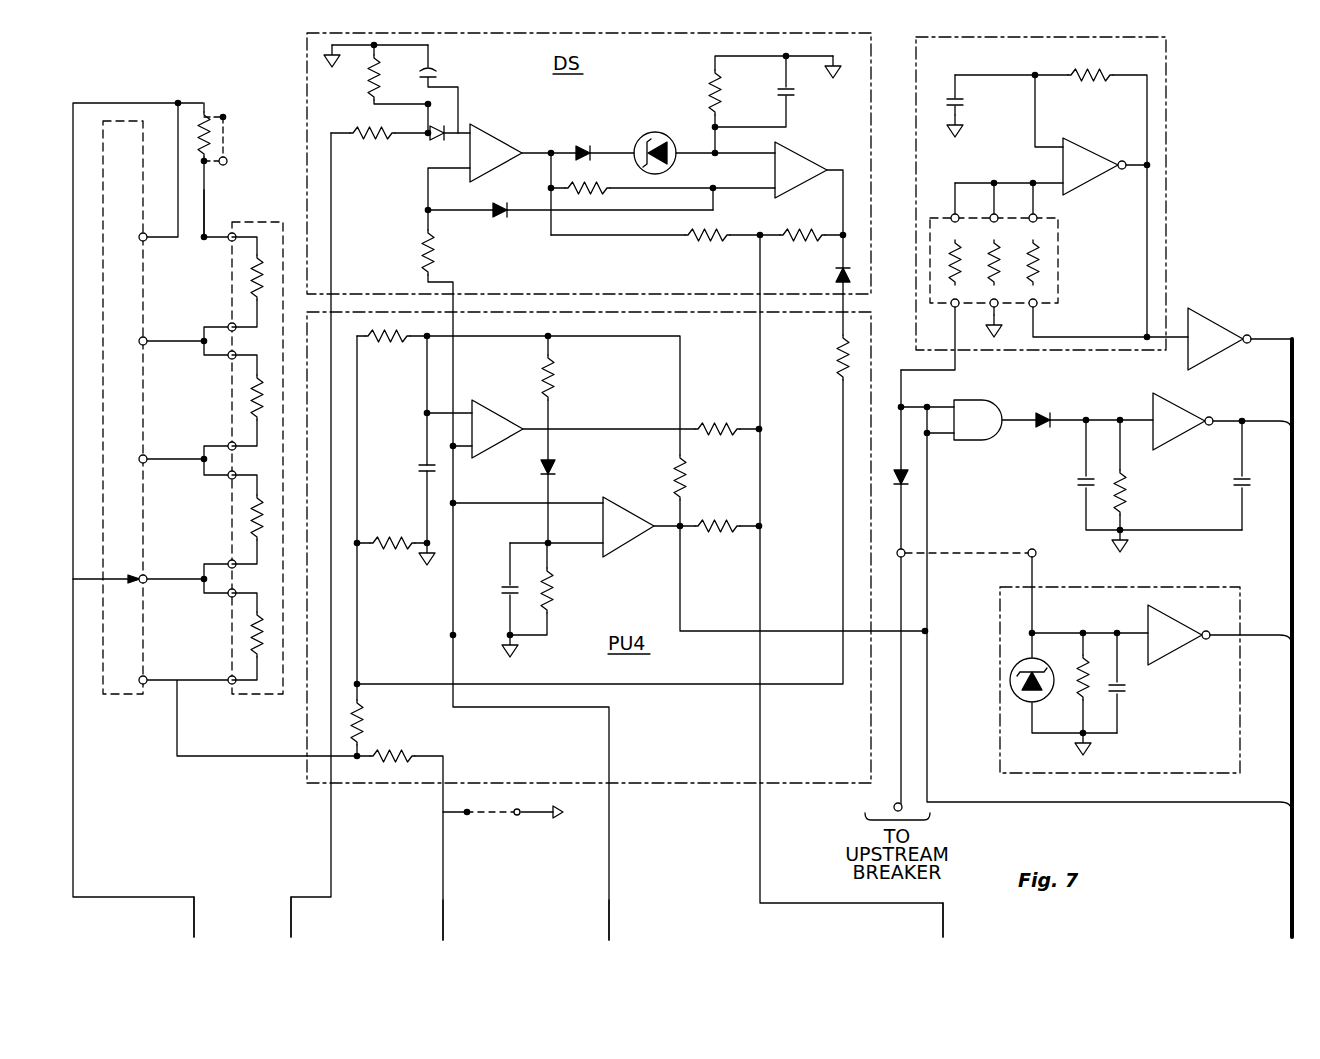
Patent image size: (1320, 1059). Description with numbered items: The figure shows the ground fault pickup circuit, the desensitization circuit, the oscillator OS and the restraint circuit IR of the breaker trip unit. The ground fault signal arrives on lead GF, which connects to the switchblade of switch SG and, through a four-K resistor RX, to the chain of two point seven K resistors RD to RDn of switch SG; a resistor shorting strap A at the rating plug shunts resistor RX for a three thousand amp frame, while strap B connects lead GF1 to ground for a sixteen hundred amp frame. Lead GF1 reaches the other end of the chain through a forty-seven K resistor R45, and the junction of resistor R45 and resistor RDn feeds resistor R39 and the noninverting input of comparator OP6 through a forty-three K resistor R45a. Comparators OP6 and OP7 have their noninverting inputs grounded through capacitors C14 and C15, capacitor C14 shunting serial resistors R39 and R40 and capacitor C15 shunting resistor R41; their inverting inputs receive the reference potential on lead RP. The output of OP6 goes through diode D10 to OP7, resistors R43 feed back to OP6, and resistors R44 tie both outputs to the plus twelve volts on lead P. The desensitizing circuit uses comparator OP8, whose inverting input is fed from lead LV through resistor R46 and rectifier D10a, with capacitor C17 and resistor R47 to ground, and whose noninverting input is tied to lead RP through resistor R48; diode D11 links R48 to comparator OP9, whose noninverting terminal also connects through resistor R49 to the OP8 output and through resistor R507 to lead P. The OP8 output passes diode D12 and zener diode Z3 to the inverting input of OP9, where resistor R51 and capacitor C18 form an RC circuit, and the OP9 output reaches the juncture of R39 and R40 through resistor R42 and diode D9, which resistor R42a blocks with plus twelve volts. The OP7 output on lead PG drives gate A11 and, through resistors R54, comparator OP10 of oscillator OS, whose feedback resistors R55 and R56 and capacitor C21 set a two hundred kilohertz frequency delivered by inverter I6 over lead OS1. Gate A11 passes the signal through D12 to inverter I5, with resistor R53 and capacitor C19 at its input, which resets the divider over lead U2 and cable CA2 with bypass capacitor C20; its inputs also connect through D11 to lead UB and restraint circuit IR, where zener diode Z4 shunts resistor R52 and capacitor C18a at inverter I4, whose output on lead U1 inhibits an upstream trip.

The resistor RX is at (192, 142).
The strap A is at (227, 142).
The switch SG is at (212, 227).
The resistor RD is at (257, 280).
The resistor RDn is at (257, 635).
The resistor R47 is at (372, 88).
The capacitor C17 is at (440, 77).
The resistor R46 is at (391, 137).
The rectifier D10a is at (436, 141).
The comparator OP8 is at (509, 136).
The diode D12 is at (592, 147).
The zener diode Z3 is at (648, 122).
The resistor R51 is at (712, 87).
The capacitor C18 is at (789, 83).
The comparator OP9 is at (813, 177).
The resistor R49 is at (596, 192).
The diode D11 is at (493, 210).
The resistor R48 is at (432, 238).
The resistor R507 is at (690, 243).
The resistor R42a is at (792, 221).
The diode D9 is at (834, 278).
The resistor R42 is at (836, 358).
The lead P is at (943, 928).
The resistor R39 is at (406, 340).
The capacitor C14 is at (418, 470).
The resistor R40 is at (369, 519).
The comparator OP6 is at (508, 409).
The resistor R43 is at (560, 361).
The diode D10 is at (558, 469).
The resistor R44 is at (700, 421).
The comparator OP7 is at (638, 511).
The capacitor C15 is at (501, 590).
The resistor R41 is at (560, 586).
The resistor R45a is at (368, 697).
The resistor R45 is at (379, 754).
The strap B is at (480, 819).
The lead GF is at (194, 918).
The lead LV is at (300, 897).
The lead GF1 is at (443, 918).
The lead RP is at (609, 918).
The resistor R56 is at (1070, 74).
The capacitor C21 is at (965, 104).
The comparator OP10 is at (1103, 151).
The resistor R54 is at (992, 252).
The resistor R55 is at (1040, 263).
The oscillator OS is at (1168, 233).
The inverter I6 is at (1219, 339).
The lead OS1 is at (1272, 339).
The gate A11 is at (950, 420).
The inverter I5 is at (1222, 421).
The lead U2 is at (1269, 420).
The capacitor C19 is at (1078, 484).
The resistor R53 is at (1122, 489).
The capacitor C20 is at (1236, 482).
The lead UB is at (905, 578).
The zener diode Z4 is at (1009, 683).
The resistor R52 is at (1090, 693).
The capacitor C18a is at (1127, 690).
The inverter I4 is at (1220, 635).
The lead U1 is at (1269, 635).
The restraint circuit IR is at (1240, 740).
The lead PG is at (1003, 802).
The cable CA2 is at (1290, 899).